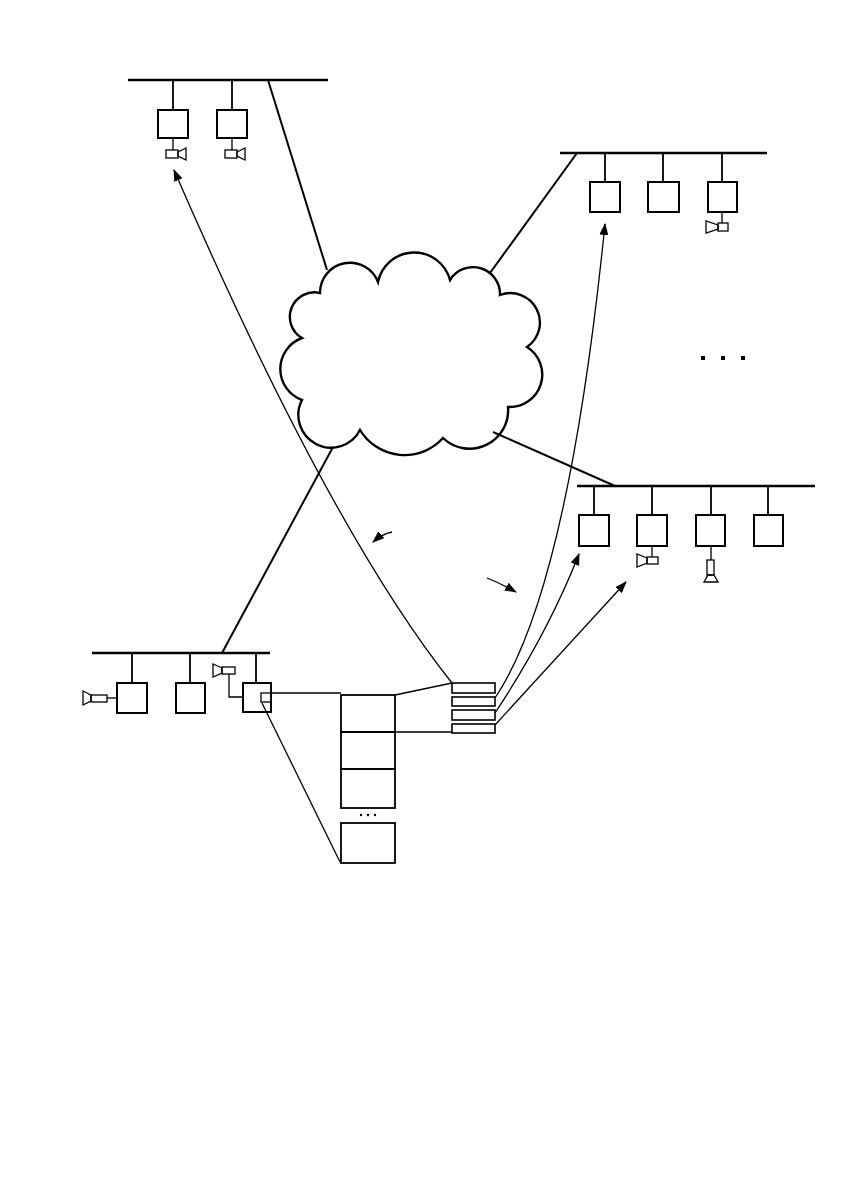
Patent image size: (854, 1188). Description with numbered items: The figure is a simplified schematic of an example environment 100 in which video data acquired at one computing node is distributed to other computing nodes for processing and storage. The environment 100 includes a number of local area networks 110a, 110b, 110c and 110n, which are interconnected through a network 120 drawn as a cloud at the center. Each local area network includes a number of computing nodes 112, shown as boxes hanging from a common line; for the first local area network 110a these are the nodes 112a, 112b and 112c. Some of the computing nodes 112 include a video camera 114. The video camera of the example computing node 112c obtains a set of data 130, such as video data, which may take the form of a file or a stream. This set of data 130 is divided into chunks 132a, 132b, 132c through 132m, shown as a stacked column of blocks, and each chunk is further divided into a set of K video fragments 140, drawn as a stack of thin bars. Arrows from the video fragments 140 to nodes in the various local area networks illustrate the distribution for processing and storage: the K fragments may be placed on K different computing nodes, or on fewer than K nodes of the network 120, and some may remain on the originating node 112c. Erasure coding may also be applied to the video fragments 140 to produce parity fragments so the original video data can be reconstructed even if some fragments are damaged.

The environment 100 is at (501, 67).
The local area network 110a is at (177, 674).
The local area network 110b is at (152, 61).
The local area network 110c is at (657, 121).
The local area network 110n is at (733, 470).
The computing nodes 112 is at (228, 190).
The computing node 112a is at (132, 715).
The computing node 112b is at (190, 715).
The computing node 112c is at (256, 715).
The video camera 114 is at (79, 699).
The network 120 is at (411, 353).
The set of data 130 is at (265, 681).
The chunk 132a is at (368, 713).
The chunk 132b is at (368, 750).
The chunk 132c is at (368, 788).
The chunk 132m is at (368, 843).
The video fragments 140 is at (474, 742).